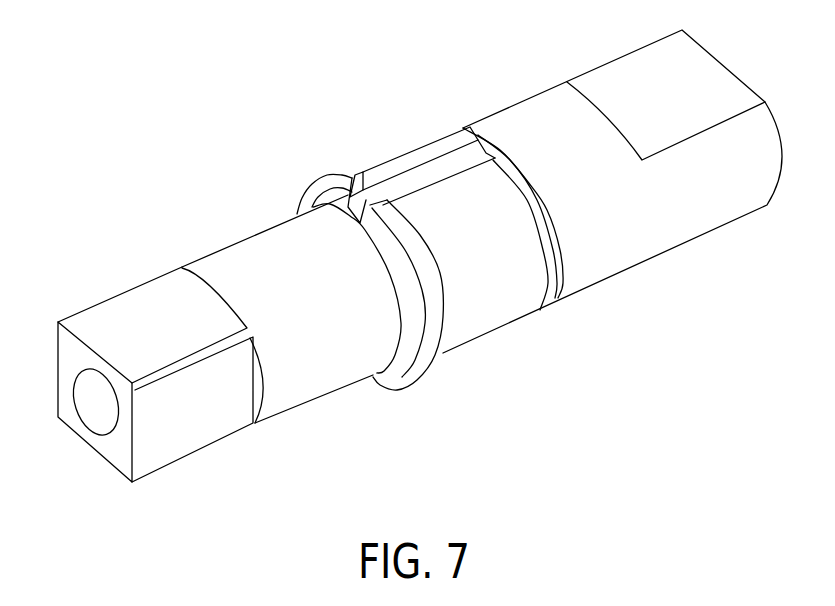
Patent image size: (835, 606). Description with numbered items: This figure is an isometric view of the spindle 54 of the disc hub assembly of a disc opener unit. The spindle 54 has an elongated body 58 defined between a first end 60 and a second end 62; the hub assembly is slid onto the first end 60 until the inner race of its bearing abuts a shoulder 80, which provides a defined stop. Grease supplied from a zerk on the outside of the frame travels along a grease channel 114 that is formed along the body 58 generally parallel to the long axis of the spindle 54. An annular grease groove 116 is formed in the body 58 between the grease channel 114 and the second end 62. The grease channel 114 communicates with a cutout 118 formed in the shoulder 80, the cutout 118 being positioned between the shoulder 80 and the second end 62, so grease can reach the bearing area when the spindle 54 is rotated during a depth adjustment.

The spindle 54 is at (383, 96).
The body 58 is at (487, 318).
The first end 60 is at (67, 352).
The second end 62 is at (767, 157).
The shoulder 80 is at (307, 194).
The grease channel 114 is at (440, 162).
The annular grease groove 116 is at (508, 157).
The cutout 118 is at (360, 208).